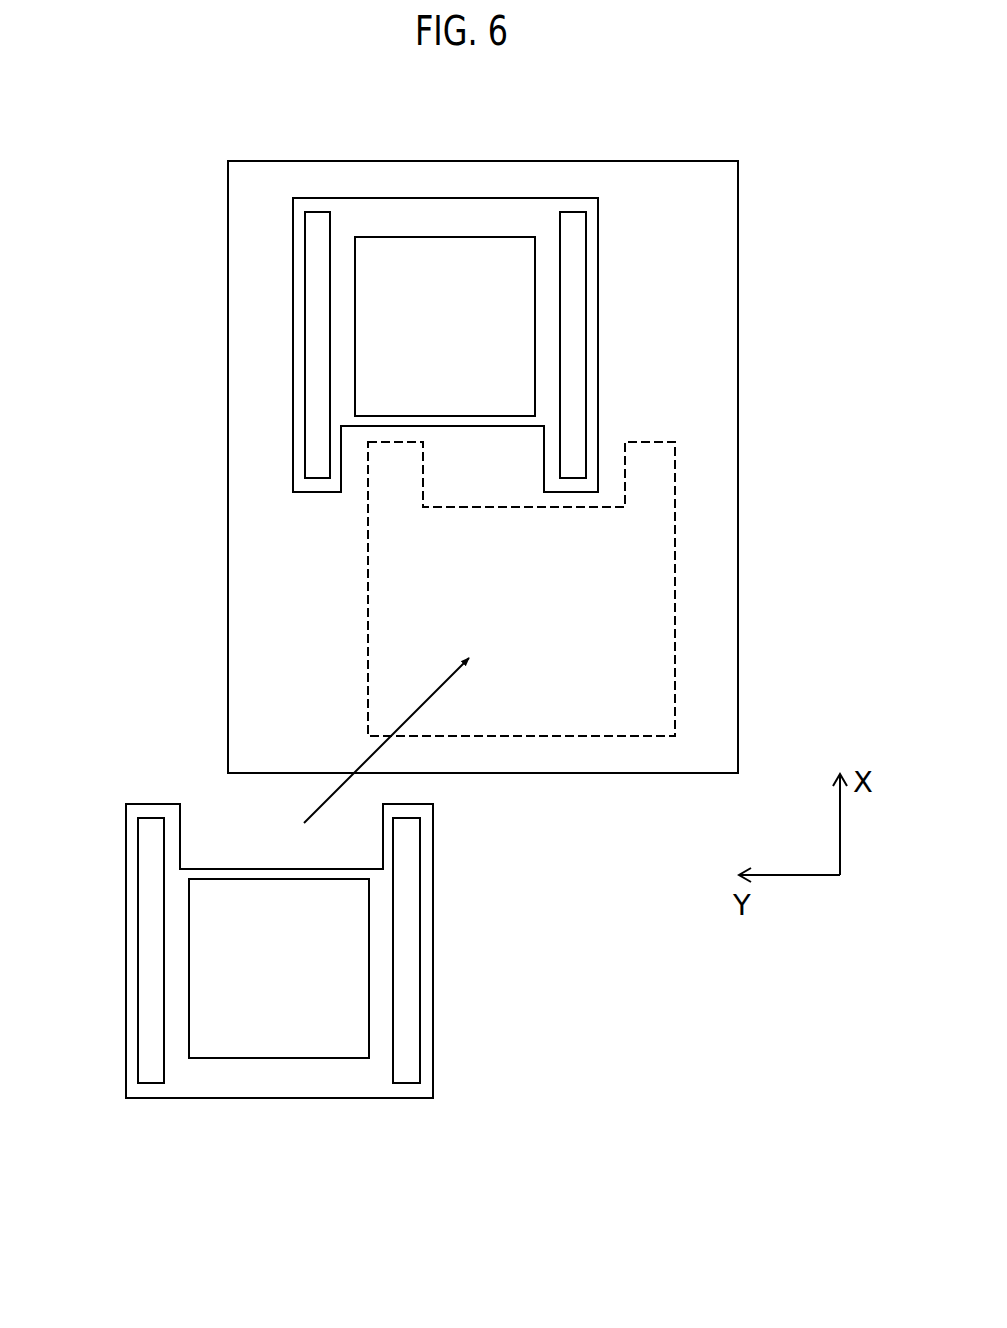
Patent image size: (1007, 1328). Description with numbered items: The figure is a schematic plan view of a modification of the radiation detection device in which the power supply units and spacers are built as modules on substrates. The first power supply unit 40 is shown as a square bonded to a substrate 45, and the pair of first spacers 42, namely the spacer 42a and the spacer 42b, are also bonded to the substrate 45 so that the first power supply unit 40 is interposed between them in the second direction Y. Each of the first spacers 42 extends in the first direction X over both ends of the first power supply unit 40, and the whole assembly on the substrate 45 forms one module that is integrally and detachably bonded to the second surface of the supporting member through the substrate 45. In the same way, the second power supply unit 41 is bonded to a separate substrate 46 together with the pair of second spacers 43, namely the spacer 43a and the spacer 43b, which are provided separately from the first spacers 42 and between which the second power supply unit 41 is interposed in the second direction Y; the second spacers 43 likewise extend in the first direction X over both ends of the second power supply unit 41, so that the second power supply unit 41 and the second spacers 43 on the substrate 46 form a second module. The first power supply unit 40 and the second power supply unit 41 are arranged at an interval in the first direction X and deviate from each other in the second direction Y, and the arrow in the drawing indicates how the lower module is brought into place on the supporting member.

The first power supply unit 40 is at (277, 1022).
The second power supply unit 41 is at (442, 275).
The pair of first spacers 42 is at (285, 950).
The spacer 42a is at (410, 945).
The spacer 42b is at (152, 953).
The pair of second spacers 43 is at (466, 345).
The spacer 43a is at (318, 300).
The spacer 43b is at (575, 307).
The substrate 45 is at (350, 1078).
The substrate 46 is at (508, 222).